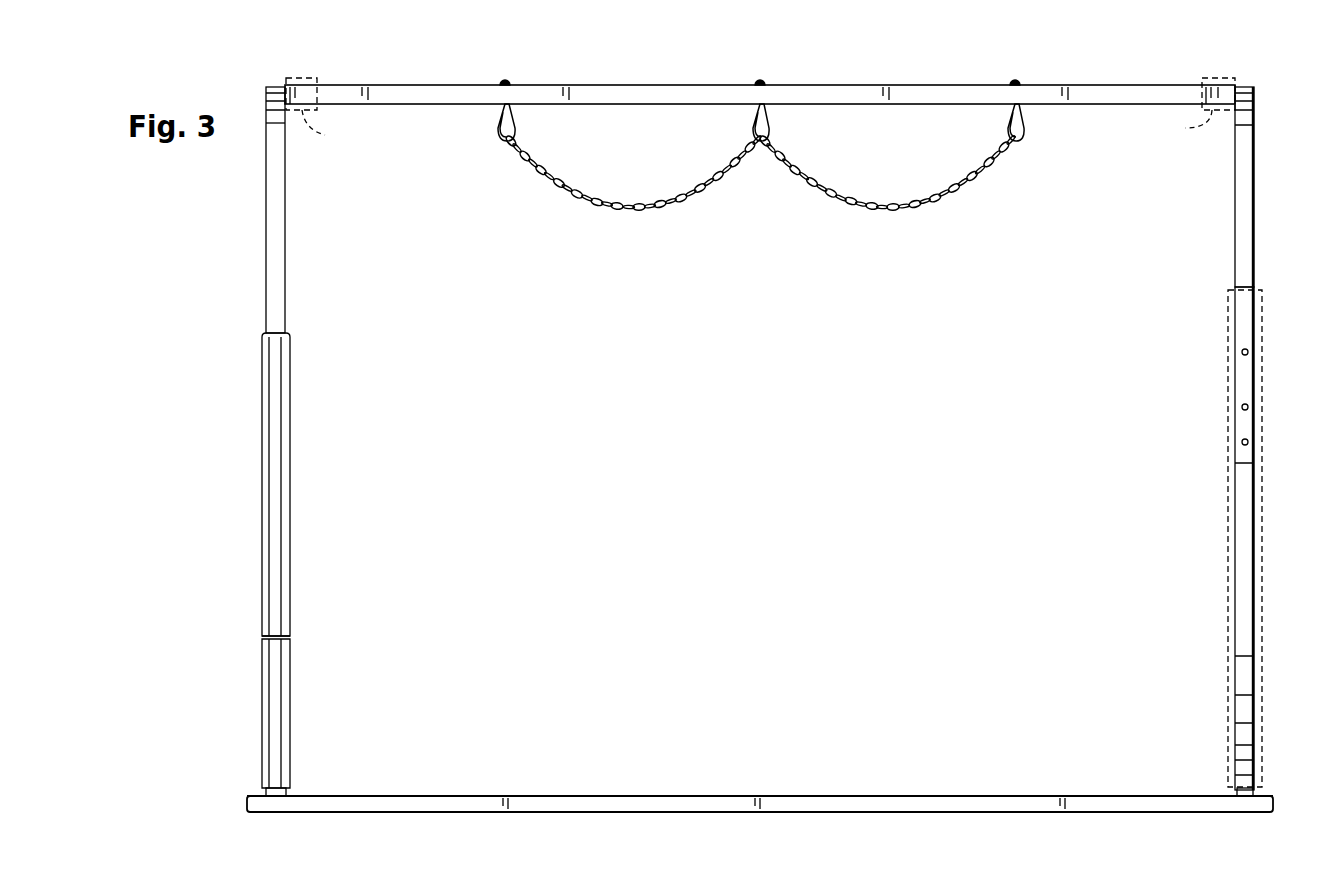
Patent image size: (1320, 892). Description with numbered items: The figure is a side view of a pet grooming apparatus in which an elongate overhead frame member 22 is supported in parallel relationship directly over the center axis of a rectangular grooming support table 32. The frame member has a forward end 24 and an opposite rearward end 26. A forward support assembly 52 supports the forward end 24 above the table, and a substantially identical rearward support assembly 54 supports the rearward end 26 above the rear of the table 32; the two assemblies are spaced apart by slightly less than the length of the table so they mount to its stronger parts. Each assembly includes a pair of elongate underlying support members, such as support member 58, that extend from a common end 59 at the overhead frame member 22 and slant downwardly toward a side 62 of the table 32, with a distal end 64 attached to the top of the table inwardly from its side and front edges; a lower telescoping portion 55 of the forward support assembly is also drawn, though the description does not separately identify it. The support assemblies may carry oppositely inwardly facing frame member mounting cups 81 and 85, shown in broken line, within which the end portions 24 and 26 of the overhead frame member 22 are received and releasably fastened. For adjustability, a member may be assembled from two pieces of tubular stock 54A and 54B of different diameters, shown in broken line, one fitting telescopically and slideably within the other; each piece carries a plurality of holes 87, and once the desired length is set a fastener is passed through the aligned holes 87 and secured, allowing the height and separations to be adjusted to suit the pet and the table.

The overhead frame member 22 is at (640, 88).
The forward end 24 is at (300, 87).
The rearward end 26 is at (1231, 87).
The grooming support table 32 is at (590, 797).
The forward support assembly 52 is at (277, 423).
The rearward support assembly 54 is at (1224, 441).
The tubular piece 54A is at (1248, 229).
The tubular piece 54B is at (1228, 440).
The telescoping sleeve 55 is at (281, 468).
The support member 58 is at (286, 235).
The common end 59 is at (272, 85).
The side of the table 62 is at (467, 797).
The distal end 64 is at (290, 794).
The frame member mounting cup 81 is at (1188, 130).
The frame member mounting cup 85 is at (327, 130).
The holes 87 is at (1248, 404).